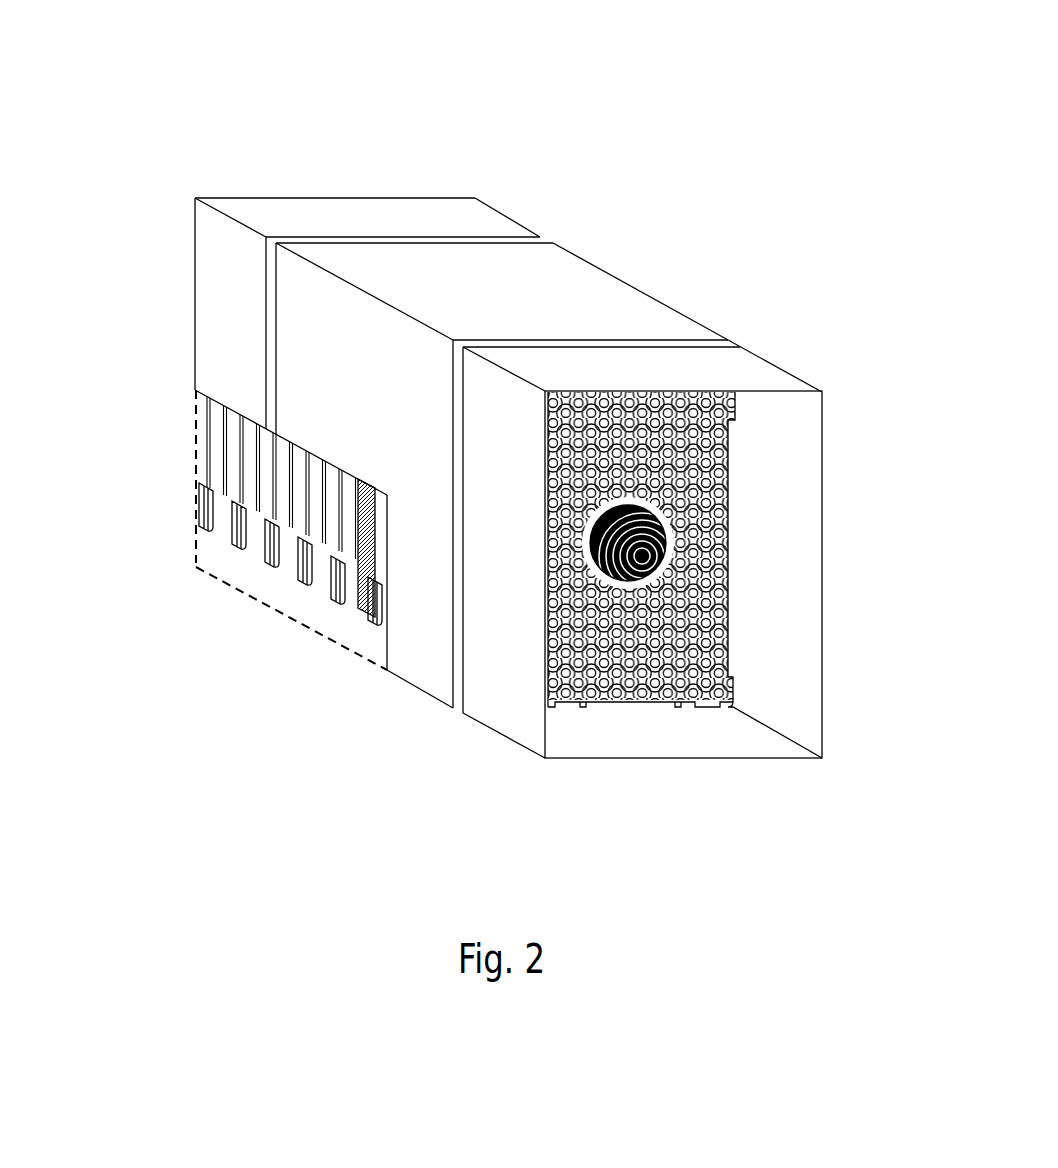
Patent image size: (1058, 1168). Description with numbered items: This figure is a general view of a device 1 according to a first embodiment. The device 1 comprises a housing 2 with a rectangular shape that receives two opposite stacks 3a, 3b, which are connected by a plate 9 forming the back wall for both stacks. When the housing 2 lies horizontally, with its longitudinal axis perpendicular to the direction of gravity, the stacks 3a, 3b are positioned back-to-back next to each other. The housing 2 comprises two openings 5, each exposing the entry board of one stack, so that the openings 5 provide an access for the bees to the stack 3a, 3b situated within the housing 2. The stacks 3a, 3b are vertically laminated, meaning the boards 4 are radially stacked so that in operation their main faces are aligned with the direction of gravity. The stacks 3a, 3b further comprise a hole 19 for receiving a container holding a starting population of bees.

The device 1 is at (634, 120).
The housing 2 is at (622, 298).
The stack 3a is at (718, 697).
The stack 3b is at (235, 443).
The boards 4 is at (232, 543).
The openings 5 is at (627, 702).
The plate 9 is at (283, 507).
The hole 19 is at (660, 532).